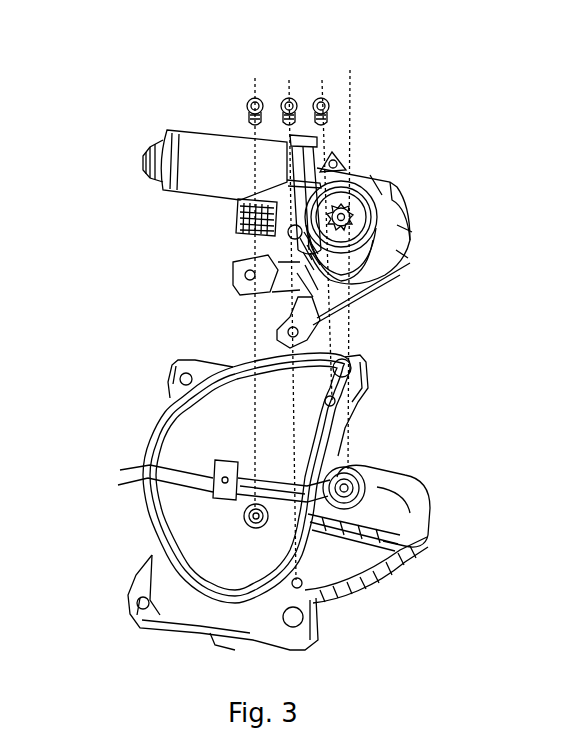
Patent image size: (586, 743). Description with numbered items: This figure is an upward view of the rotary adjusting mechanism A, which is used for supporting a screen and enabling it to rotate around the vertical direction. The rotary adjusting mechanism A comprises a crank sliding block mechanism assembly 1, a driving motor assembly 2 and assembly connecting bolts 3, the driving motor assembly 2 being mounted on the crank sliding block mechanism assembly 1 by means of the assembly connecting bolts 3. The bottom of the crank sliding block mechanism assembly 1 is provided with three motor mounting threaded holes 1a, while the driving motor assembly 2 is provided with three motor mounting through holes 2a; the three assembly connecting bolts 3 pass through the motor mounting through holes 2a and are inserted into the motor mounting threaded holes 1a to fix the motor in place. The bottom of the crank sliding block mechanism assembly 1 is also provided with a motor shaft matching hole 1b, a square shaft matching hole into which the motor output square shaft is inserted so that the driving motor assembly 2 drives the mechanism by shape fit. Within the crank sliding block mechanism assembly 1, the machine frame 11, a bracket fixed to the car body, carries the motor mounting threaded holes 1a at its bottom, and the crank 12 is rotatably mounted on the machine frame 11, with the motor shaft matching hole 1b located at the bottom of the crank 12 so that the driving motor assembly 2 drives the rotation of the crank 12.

The rotary adjusting mechanism A is at (349, 63).
The crank sliding block mechanism assembly 1 is at (135, 516).
The motor mounting threaded holes 1a is at (340, 403).
The motor shaft matching hole 1b is at (420, 521).
The driving motor assembly 2 is at (155, 193).
The motor mounting through holes 2a is at (326, 164).
The assembly connecting bolts 3 is at (237, 105).
The machine frame 11 is at (152, 453).
The crank 12 is at (427, 498).